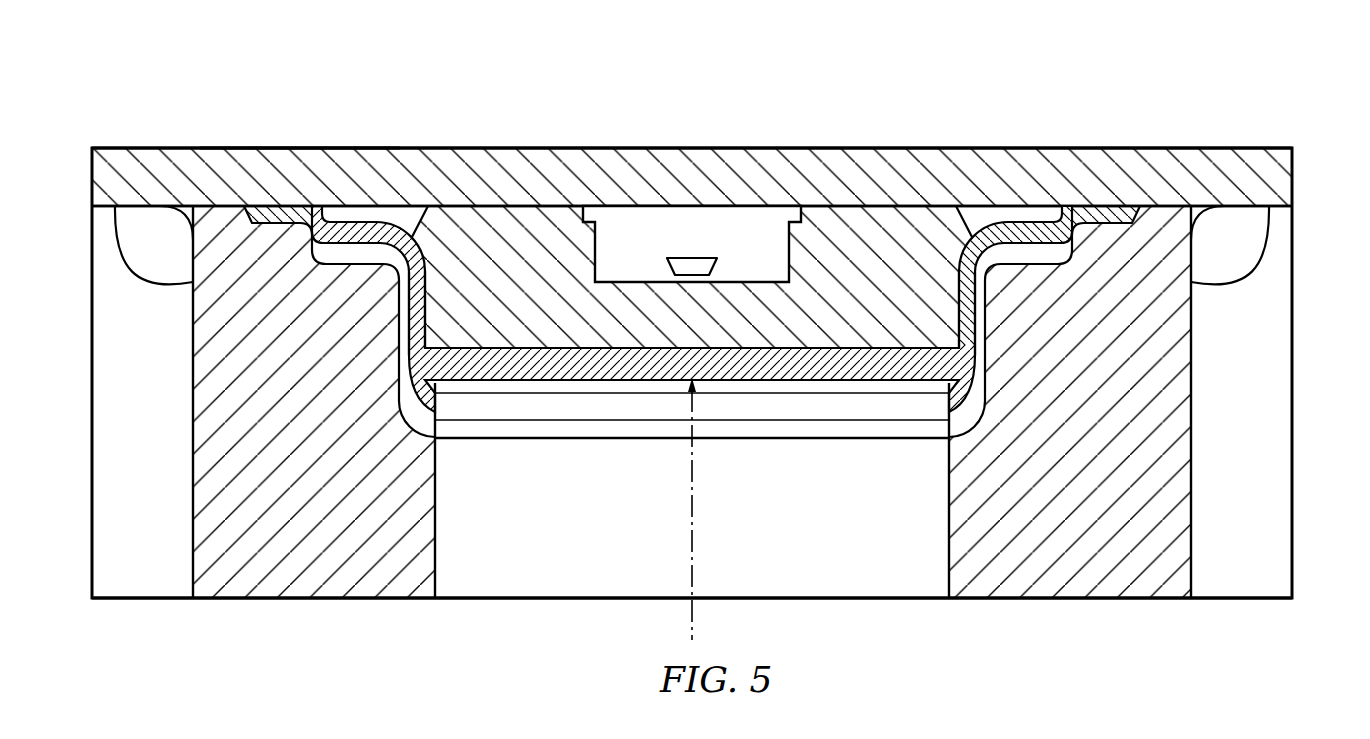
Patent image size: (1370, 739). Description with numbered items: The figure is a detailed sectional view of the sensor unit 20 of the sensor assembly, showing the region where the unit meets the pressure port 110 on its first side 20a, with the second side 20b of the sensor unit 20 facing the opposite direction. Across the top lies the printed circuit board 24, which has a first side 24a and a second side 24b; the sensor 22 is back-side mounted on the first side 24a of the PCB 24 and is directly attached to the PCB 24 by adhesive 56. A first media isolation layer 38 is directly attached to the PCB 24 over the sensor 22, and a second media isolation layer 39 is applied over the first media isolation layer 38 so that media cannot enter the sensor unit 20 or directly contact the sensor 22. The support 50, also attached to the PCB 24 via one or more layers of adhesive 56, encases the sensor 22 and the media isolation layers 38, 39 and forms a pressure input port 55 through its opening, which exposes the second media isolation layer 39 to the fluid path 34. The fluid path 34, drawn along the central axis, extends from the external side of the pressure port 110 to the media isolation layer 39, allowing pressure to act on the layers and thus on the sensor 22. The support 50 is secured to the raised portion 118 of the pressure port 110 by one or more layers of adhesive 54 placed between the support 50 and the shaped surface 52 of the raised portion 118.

The sensor unit 20 is at (118, 97).
The first side of sensor unit 20a is at (542, 449).
The second side of sensor unit 20b is at (290, 136).
The sensor 22 is at (712, 237).
The printed circuit board 24 is at (1265, 172).
The first side of PCB 24a is at (1253, 206).
The second side of PCB 24b is at (1262, 147).
The fluid path 34 is at (700, 502).
The first media isolation layer 38 is at (933, 281).
The second media isolation layer 39 is at (925, 360).
The support 50 is at (403, 389).
The shaped surface 52 is at (356, 272).
The adhesive 54 is at (340, 253).
The pressure input port 55 is at (820, 385).
The adhesive 56 is at (403, 216).
The pressure port 110 is at (1265, 487).
The raised portion 118 is at (322, 568).